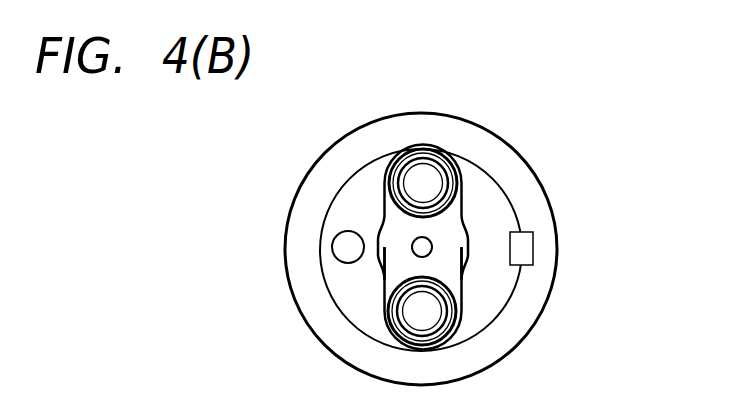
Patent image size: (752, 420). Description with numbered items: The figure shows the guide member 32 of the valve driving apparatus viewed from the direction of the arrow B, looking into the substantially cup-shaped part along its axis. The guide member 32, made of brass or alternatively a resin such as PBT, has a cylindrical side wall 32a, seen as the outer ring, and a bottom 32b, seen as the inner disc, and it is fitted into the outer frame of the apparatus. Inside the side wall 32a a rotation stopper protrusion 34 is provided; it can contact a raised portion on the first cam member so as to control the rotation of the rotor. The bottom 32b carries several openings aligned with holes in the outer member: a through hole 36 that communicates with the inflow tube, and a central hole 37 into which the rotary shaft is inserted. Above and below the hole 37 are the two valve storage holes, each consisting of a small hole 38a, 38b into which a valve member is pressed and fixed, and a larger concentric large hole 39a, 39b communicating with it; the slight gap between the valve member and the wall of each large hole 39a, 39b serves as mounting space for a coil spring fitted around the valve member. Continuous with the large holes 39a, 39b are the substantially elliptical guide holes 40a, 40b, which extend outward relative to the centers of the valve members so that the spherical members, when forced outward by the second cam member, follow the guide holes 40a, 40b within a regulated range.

The guide member 32 is at (452, 232).
The cylindrical side wall 32a is at (418, 118).
The bottom 32b is at (508, 207).
The rotation stopper protrusion 34 is at (527, 247).
The through hole 36 is at (343, 258).
The hole 37 is at (427, 250).
The small hole 38a is at (422, 173).
The small hole 38b is at (427, 316).
The large hole 39a is at (404, 158).
The large hole 39b is at (450, 313).
The guide hole 40a is at (393, 170).
The guide hole 40b is at (446, 337).